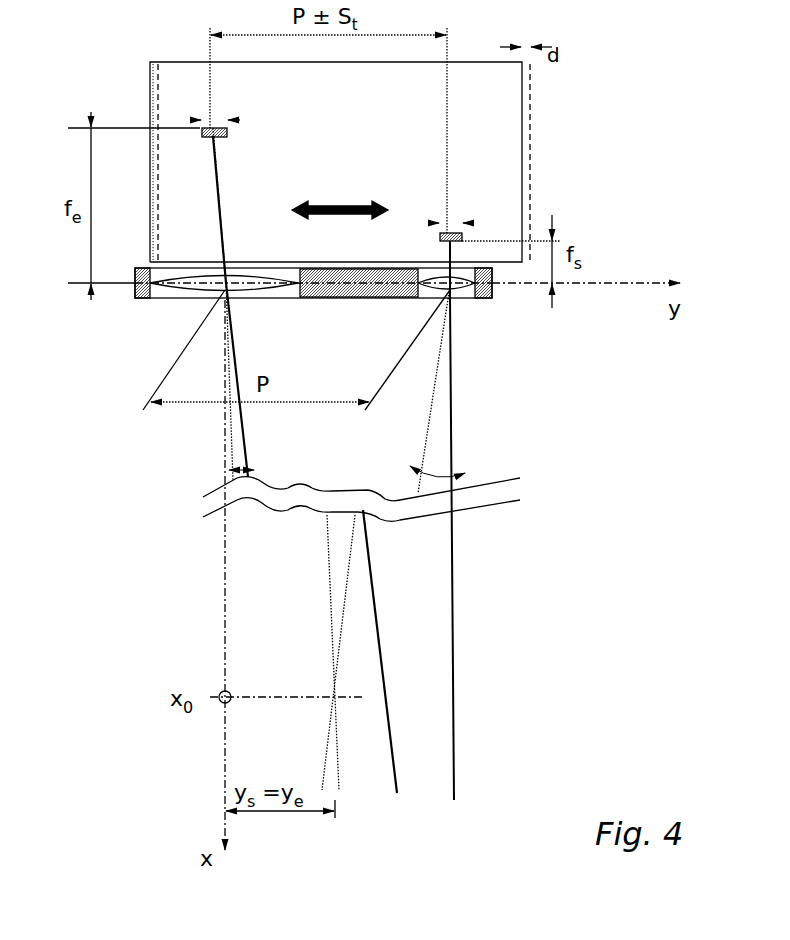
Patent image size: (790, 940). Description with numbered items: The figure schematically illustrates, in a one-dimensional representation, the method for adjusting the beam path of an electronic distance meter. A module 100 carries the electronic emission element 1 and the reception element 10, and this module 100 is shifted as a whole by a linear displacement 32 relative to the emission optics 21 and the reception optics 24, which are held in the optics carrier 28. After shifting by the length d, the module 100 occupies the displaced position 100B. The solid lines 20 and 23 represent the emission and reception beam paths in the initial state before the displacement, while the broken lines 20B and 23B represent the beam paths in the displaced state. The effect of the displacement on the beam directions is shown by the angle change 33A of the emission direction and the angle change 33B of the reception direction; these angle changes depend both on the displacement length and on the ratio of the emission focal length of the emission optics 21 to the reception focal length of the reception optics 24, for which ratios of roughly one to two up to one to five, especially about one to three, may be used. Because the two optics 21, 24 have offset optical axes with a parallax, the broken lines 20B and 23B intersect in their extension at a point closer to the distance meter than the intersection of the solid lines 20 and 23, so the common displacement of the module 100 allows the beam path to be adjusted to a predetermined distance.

The electronic emission element 1 is at (458, 230).
The reception element 10 is at (200, 127).
The emission beam path 20 is at (452, 412).
The displaced emission beam path 20B is at (423, 457).
The emission optics 21 is at (470, 293).
The reception beam path 23 is at (240, 417).
The displaced reception beam path 23B is at (237, 452).
The reception optics 24 is at (185, 288).
The optics carrier 28 is at (310, 293).
The linear displacement 32 is at (330, 208).
The angle change of the emission direction 33A is at (450, 462).
The angle change of the reception direction 33B is at (240, 500).
The module 100 is at (522, 170).
The displaced module position 100B is at (530, 126).